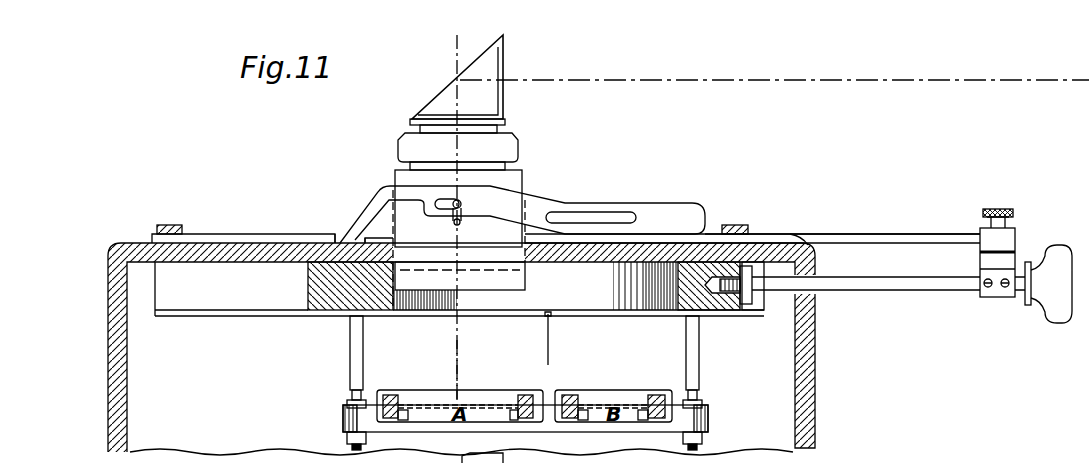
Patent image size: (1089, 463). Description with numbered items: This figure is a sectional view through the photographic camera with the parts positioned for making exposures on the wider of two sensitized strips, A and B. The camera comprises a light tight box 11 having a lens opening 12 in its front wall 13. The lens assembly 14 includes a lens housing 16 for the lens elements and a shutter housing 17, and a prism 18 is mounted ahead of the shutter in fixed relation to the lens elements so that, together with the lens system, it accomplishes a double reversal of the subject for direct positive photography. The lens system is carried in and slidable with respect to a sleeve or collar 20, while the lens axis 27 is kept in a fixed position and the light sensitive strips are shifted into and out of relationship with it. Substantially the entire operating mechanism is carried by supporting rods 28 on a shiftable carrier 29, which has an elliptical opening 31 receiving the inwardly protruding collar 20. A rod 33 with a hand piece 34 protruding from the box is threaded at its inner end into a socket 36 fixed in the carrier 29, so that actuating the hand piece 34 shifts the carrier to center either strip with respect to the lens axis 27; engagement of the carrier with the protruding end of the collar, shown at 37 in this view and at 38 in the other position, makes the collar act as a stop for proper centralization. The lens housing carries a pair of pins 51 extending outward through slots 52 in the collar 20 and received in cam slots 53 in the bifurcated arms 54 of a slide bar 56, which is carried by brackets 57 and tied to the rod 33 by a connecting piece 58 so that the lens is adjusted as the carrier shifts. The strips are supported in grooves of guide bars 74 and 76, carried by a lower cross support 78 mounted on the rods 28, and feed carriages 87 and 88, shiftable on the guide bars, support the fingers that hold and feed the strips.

The light tight box 11 is at (108, 299).
The lens opening 12 is at (376, 242).
The front wall 13 is at (770, 256).
The lens assembly 14 is at (407, 124).
The lens housing 16 is at (524, 176).
The shutter housing 17 is at (520, 146).
The prism 18 is at (493, 69).
The sleeve or collar 20 is at (528, 268).
The lens axis 27 is at (461, 352).
The supporting rods 28 is at (349, 369).
The shiftable block or carrier 29 is at (330, 300).
The elliptical opening 31 is at (601, 298).
The rod 33 is at (931, 291).
The hand piece 34 is at (1062, 311).
The socket 36 is at (746, 302).
The carrier engagement with collar end 37 is at (348, 262).
The carrier engagement with collar end 38 is at (680, 291).
The pins 51 is at (438, 207).
The slots 52 is at (455, 219).
The cam slots 53 is at (548, 216).
The bifurcated arms 54 is at (647, 206).
The slide bar 56 is at (899, 232).
The brackets 57 is at (183, 225).
The connecting piece 58 is at (1012, 256).
The guide bar 74 is at (411, 419).
The guide bar 76 is at (573, 396).
The lower cross support 78 is at (708, 423).
The feed carriage 87 is at (391, 392).
The feed carriage 88 is at (656, 393).